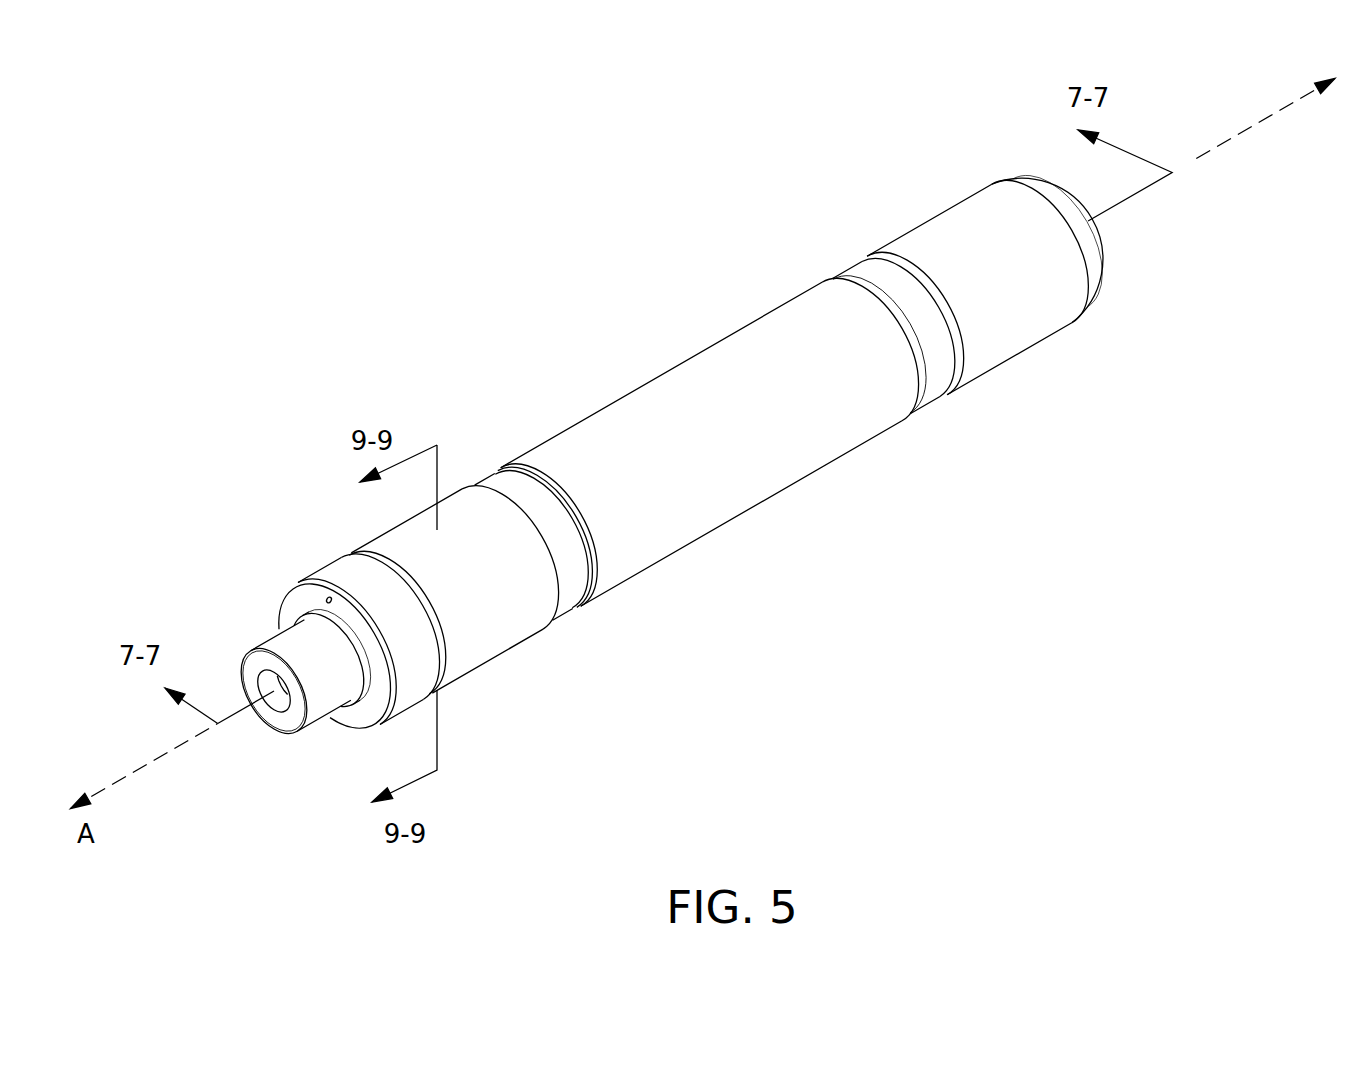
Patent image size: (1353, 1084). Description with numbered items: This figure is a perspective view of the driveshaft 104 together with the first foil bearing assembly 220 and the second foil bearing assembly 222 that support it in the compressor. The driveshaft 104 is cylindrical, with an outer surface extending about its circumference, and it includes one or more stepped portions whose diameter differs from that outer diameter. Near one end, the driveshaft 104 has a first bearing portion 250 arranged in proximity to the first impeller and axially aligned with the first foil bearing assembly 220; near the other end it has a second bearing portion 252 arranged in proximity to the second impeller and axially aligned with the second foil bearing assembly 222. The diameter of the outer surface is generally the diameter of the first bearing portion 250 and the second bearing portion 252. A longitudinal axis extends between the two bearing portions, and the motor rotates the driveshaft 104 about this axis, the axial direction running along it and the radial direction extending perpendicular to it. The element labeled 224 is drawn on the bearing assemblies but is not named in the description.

The driveshaft 104 is at (658, 400).
The first foil bearing assembly 220 is at (350, 532).
The second foil bearing assembly 222 is at (920, 198).
The sleeve / collar 224 is at (465, 505).
The first bearing portion 250 is at (345, 412).
The second bearing portion 252 is at (868, 202).